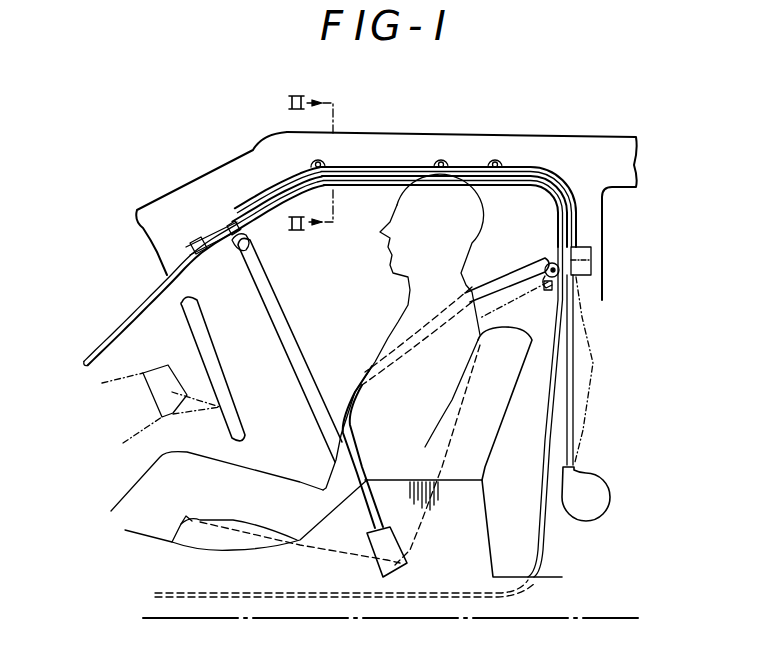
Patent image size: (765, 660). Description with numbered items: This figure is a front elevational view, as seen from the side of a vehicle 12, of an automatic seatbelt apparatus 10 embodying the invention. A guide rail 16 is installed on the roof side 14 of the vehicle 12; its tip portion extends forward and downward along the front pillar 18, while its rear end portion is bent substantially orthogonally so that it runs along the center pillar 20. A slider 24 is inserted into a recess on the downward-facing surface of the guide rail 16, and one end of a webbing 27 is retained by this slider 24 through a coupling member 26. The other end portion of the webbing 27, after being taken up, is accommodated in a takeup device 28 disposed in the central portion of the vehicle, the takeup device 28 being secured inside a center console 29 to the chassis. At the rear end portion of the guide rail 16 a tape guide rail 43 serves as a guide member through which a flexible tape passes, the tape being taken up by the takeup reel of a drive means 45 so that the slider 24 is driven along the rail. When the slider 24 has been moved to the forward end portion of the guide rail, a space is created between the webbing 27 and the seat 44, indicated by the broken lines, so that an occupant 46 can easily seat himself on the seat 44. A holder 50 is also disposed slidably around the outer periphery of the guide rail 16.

The automatic seatbelt apparatus 10 is at (330, 223).
The vehicle 12 is at (500, 118).
The roof side 14 is at (296, 150).
The guide rail 16 is at (330, 234).
The front pillar 18 is at (183, 205).
The center pillar 20 is at (596, 230).
The slider 24 is at (556, 264).
The coupling member 26 is at (550, 288).
The webbing 27 is at (500, 282).
The takeup device 28 is at (393, 545).
The center console 29 is at (477, 520).
The tape guide rail 43 is at (575, 452).
The seat 44 is at (516, 403).
The drive means 45 is at (612, 489).
The occupant 46 is at (397, 282).
The holder 50 is at (596, 256).